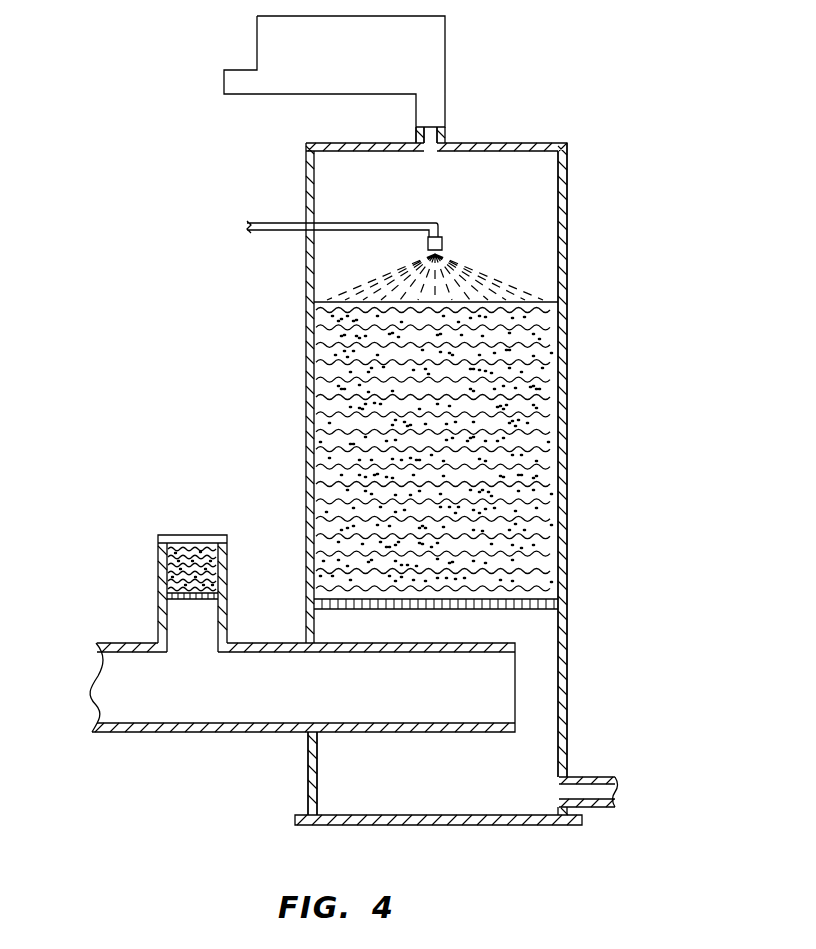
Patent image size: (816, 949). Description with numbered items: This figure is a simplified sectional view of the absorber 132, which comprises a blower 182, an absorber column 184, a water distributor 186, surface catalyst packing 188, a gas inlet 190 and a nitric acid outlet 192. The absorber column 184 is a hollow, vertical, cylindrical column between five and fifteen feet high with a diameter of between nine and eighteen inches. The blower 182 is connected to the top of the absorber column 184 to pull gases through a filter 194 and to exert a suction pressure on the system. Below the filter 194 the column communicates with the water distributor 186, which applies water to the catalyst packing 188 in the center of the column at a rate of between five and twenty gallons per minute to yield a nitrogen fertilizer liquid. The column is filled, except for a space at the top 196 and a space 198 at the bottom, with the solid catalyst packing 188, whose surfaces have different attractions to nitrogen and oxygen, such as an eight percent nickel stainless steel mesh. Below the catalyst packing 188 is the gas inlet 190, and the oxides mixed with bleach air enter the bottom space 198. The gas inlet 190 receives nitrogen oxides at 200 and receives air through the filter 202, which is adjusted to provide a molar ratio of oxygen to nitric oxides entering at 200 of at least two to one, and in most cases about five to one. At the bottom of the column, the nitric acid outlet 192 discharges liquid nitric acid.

The absorber 132 is at (673, 141).
The blower 182 is at (420, 43).
The absorber column 184 is at (568, 248).
The water distributor 186 is at (360, 223).
The surface catalyst packing 188 is at (553, 402).
The gas inlet 190 is at (213, 746).
The nitric acid outlet 192 is at (598, 777).
The filter 194 is at (438, 140).
The upper chamber 196 is at (528, 199).
The space 198 is at (459, 784).
The nitrogen oxides entry 200 is at (112, 693).
The filter 202 is at (185, 547).